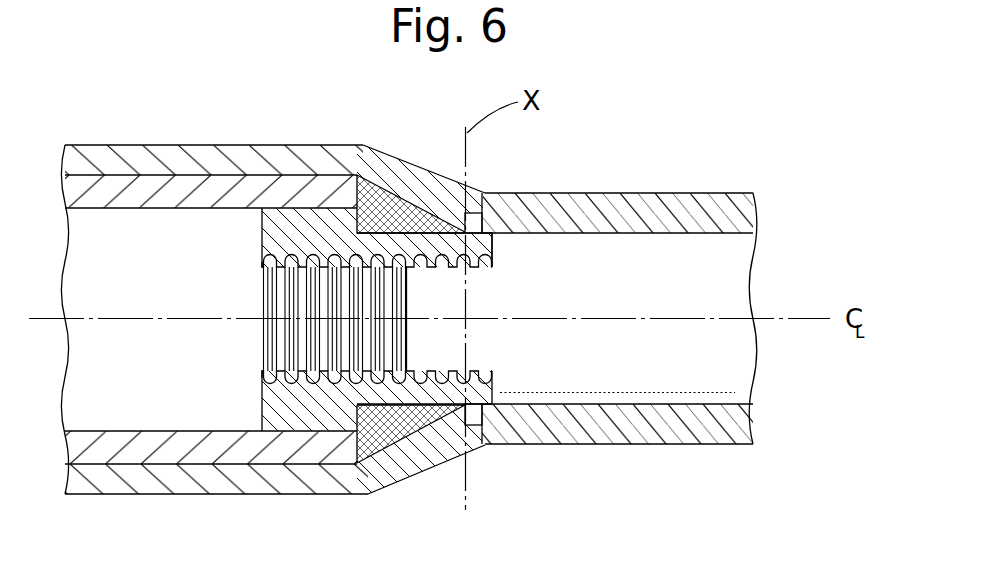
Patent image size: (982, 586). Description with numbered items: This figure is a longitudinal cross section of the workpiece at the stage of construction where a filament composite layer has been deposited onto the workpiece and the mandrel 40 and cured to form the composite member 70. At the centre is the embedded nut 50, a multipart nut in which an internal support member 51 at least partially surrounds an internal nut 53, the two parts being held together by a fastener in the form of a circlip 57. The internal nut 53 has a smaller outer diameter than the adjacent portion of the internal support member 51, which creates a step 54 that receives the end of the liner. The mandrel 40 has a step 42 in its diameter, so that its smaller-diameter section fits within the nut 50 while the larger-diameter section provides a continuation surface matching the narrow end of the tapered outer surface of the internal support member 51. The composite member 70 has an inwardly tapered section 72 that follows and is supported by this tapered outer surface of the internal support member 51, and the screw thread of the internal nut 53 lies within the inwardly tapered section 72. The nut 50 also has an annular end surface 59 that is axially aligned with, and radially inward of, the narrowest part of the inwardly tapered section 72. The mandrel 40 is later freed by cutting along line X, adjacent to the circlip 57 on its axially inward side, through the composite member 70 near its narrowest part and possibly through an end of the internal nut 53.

The mandrel 40 is at (679, 372).
The step 42 is at (493, 272).
The nut 50 is at (238, 403).
The internal support member 51 is at (412, 417).
The internal nut 53 is at (292, 215).
The step 54 is at (325, 431).
The circlip 57 is at (478, 212).
The annular end surface 59 is at (492, 250).
The composite member 70 is at (143, 150).
The inwardly tapered section 72 is at (420, 185).